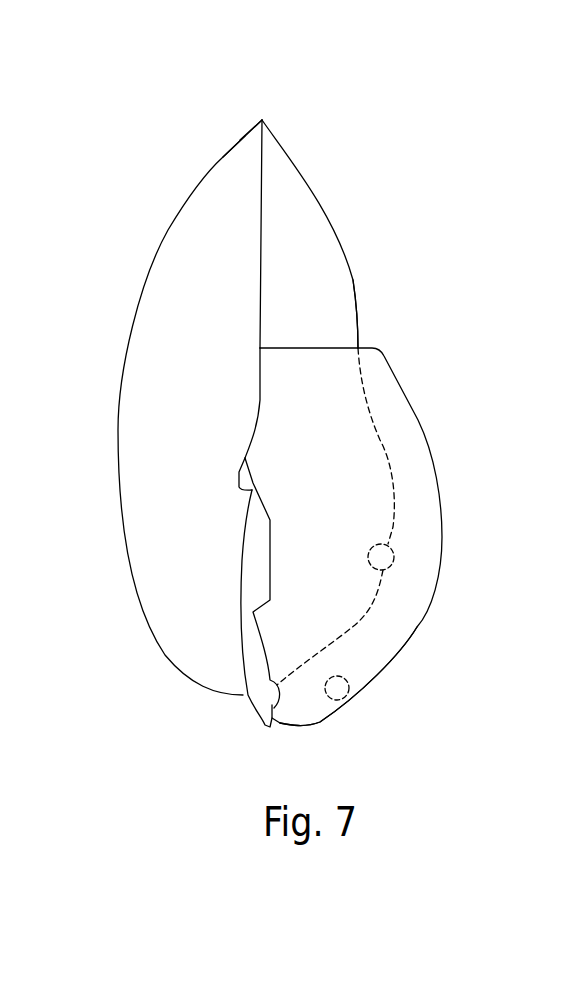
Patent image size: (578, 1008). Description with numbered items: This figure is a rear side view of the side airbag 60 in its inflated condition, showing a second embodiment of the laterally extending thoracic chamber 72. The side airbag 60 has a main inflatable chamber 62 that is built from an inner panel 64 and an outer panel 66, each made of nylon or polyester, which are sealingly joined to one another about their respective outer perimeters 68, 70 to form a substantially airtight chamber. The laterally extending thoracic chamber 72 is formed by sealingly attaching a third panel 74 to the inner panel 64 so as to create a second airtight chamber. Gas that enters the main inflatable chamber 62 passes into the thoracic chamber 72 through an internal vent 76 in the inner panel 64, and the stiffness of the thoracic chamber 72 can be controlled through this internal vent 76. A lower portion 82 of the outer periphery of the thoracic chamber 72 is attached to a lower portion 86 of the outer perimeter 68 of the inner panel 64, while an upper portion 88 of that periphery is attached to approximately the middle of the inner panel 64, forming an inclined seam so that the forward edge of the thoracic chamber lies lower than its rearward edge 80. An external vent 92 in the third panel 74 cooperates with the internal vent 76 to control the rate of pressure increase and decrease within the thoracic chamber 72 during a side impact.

The side airbag 60 is at (323, 428).
The main inflatable chamber 62 is at (290, 187).
The inner panel 64 is at (328, 220).
The outer panel 66 is at (188, 243).
The outer perimeter of inner panel 68 is at (267, 135).
The outer perimeter of outer panel 70 is at (260, 165).
The laterally extending thoracic chamber 72 is at (402, 615).
The third panel 74 is at (390, 670).
The internal vent 76 is at (394, 560).
The rearward edge 80 is at (283, 347).
The lower portion of outer periphery of thoracic chamber 82 is at (283, 722).
The lower portion of outer periphery of inner panel 86 is at (272, 705).
The upper portion of outer periphery of thoracic chamber 88 is at (337, 346).
The external vent 92 is at (346, 697).